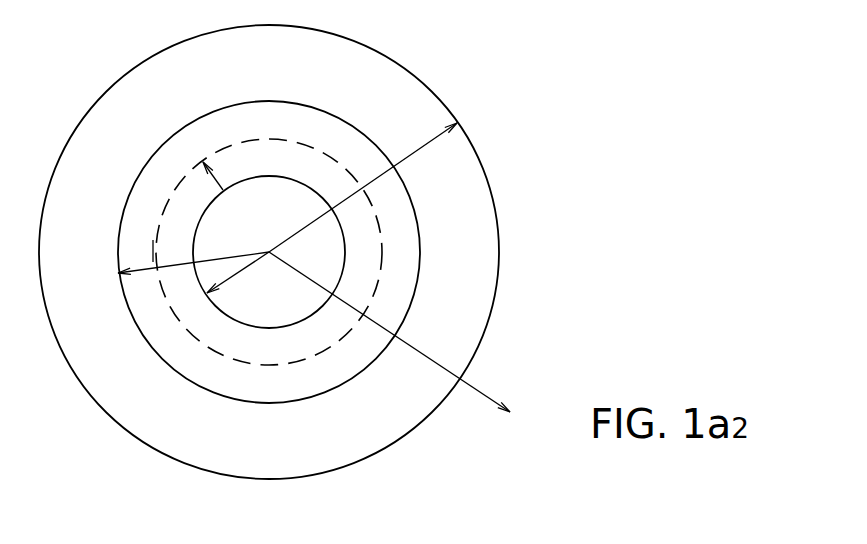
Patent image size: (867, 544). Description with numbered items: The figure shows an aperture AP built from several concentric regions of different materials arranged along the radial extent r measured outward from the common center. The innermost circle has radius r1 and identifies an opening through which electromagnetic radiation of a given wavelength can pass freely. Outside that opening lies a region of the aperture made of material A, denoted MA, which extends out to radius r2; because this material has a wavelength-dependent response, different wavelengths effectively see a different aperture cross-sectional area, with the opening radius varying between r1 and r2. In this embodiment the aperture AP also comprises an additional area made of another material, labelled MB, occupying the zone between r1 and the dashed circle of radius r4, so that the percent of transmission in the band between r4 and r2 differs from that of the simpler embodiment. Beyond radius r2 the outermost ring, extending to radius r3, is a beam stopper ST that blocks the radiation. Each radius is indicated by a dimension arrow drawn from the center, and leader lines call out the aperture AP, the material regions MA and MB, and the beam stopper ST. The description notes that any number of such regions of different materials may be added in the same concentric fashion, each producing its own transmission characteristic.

The aperture AP is at (447, 53).
The material A region MA is at (332, 177).
The material B region MB is at (385, 218).
The beam stopper ST is at (468, 275).
The radial extent r is at (389, 332).
The opening radius r1 is at (238, 277).
The material A region radius r2 is at (193, 257).
The beam stopper radius r3 is at (363, 187).
The additional material region radius r4 is at (224, 172).